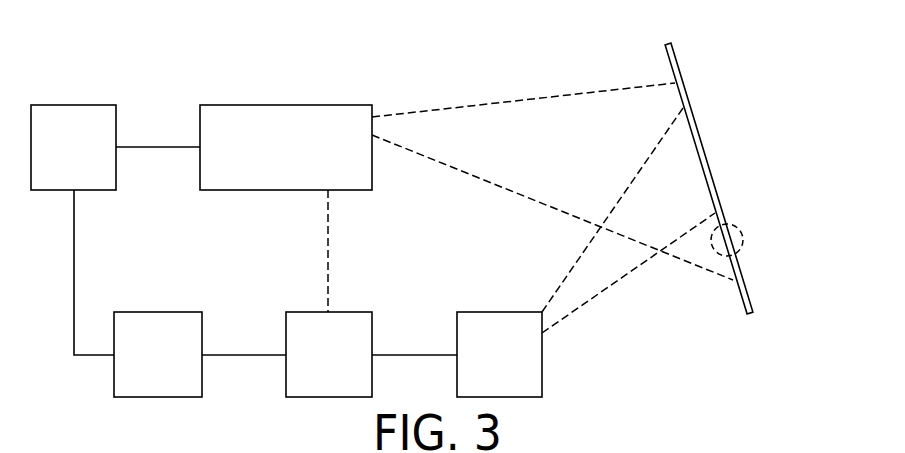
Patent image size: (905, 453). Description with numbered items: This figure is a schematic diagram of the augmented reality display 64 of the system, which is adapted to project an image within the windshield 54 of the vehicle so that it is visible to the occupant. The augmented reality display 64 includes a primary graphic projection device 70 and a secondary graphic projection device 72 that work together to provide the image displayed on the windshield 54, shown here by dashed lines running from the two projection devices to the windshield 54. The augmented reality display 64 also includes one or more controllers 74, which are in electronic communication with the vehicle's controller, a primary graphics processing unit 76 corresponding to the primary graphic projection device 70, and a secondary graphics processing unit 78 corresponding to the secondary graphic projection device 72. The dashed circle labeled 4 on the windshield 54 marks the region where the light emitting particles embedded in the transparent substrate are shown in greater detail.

The augmented reality display 64 is at (234, 62).
The secondary graphics processing unit 78 is at (58, 161).
The secondary graphic projection device 72 is at (301, 161).
The controller 74 is at (174, 366).
The primary graphics processing unit 76 is at (344, 366).
The primary graphic projection device 70 is at (514, 366).
The windshield 54 is at (702, 138).
The detail region 4 is at (777, 204).